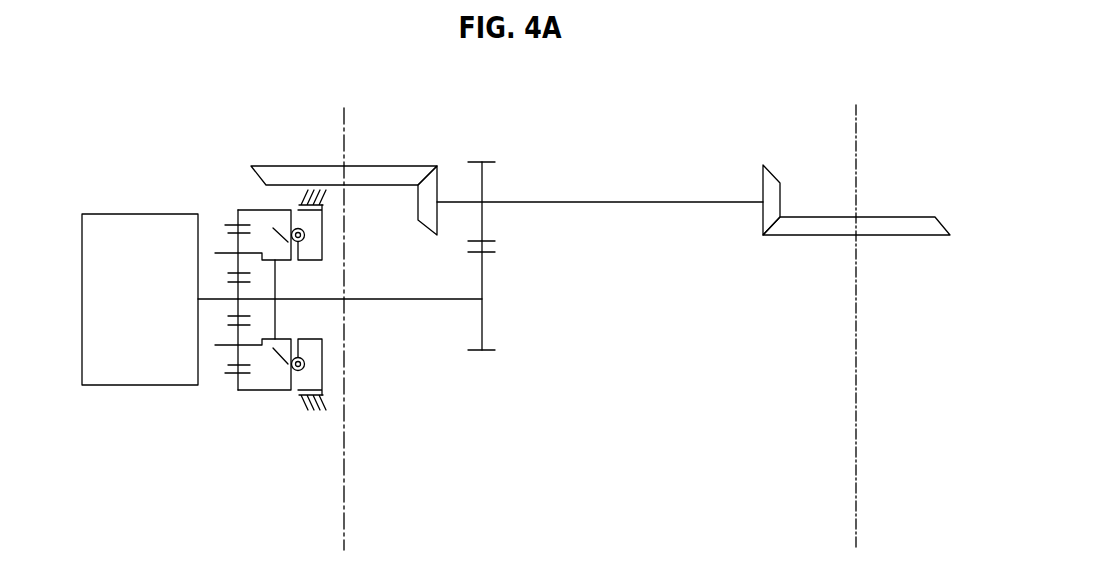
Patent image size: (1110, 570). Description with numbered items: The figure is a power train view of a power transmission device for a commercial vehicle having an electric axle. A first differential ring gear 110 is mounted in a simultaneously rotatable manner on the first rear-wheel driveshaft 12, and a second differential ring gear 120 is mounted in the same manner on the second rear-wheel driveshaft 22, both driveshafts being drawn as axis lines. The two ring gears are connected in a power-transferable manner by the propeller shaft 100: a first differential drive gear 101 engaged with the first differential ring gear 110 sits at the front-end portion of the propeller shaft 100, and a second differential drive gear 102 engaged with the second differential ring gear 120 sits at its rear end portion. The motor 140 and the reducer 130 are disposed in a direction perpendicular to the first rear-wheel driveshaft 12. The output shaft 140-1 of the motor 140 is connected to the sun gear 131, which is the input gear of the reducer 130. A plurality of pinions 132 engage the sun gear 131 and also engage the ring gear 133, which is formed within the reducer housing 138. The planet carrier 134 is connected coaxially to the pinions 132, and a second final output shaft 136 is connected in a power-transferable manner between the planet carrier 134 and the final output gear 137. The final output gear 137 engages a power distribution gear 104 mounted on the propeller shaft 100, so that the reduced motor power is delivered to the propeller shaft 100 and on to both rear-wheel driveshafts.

The first rear-wheel driveshaft 12 is at (343, 125).
The second rear-wheel driveshaft 22 is at (855, 133).
The propeller shaft 100 is at (570, 190).
The first differential drive gear 101 is at (438, 180).
The second differential drive gear 102 is at (762, 183).
The power distribution gear 104 is at (490, 162).
The first differential ring gear 110 is at (298, 165).
The second differential ring gear 120 is at (803, 238).
The reducer 130 is at (256, 412).
The sun gear 131 is at (236, 318).
The pinions 132 is at (232, 233).
The ring gear 133 is at (234, 225).
The planet carrier 134 is at (252, 252).
The second final output shaft 136 is at (430, 302).
The final output gear 137 is at (488, 255).
The reducer housing 138 is at (280, 391).
The motor 140 is at (130, 214).
The output shaft 140-1 is at (223, 300).